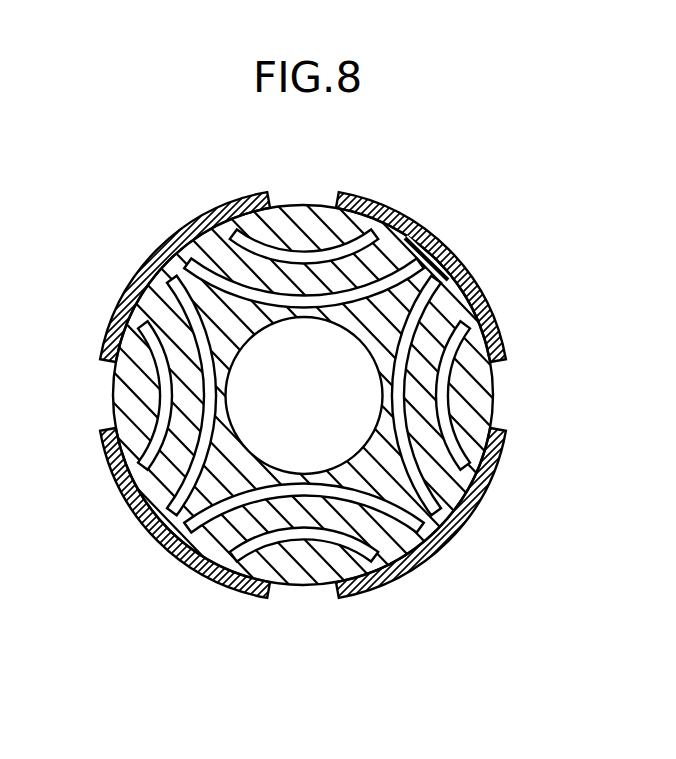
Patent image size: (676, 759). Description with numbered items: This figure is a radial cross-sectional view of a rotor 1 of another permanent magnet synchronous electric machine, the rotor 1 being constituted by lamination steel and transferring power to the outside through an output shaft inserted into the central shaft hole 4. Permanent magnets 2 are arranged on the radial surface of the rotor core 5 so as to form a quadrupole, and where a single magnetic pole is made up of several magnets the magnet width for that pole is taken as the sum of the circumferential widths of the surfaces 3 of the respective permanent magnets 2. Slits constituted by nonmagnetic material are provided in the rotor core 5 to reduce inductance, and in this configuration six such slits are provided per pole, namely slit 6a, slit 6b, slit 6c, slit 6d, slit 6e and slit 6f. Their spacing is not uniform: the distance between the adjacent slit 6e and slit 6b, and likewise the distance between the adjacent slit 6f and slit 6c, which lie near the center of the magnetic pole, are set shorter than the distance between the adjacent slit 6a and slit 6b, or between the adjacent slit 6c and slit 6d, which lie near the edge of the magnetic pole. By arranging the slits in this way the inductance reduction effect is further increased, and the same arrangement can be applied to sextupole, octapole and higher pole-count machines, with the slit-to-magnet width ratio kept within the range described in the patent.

The rotor 1 is at (112, 297).
The permanent magnets 2 is at (372, 206).
The surfaces 3 is at (488, 305).
The shaft hole 4 is at (340, 430).
The rotor core 5 is at (160, 540).
The slit 6a is at (233, 232).
The slit 6b is at (187, 260).
The slit 6c is at (470, 508).
The slit 6d is at (478, 458).
The slit 6e is at (440, 246).
The slit 6f is at (455, 274).